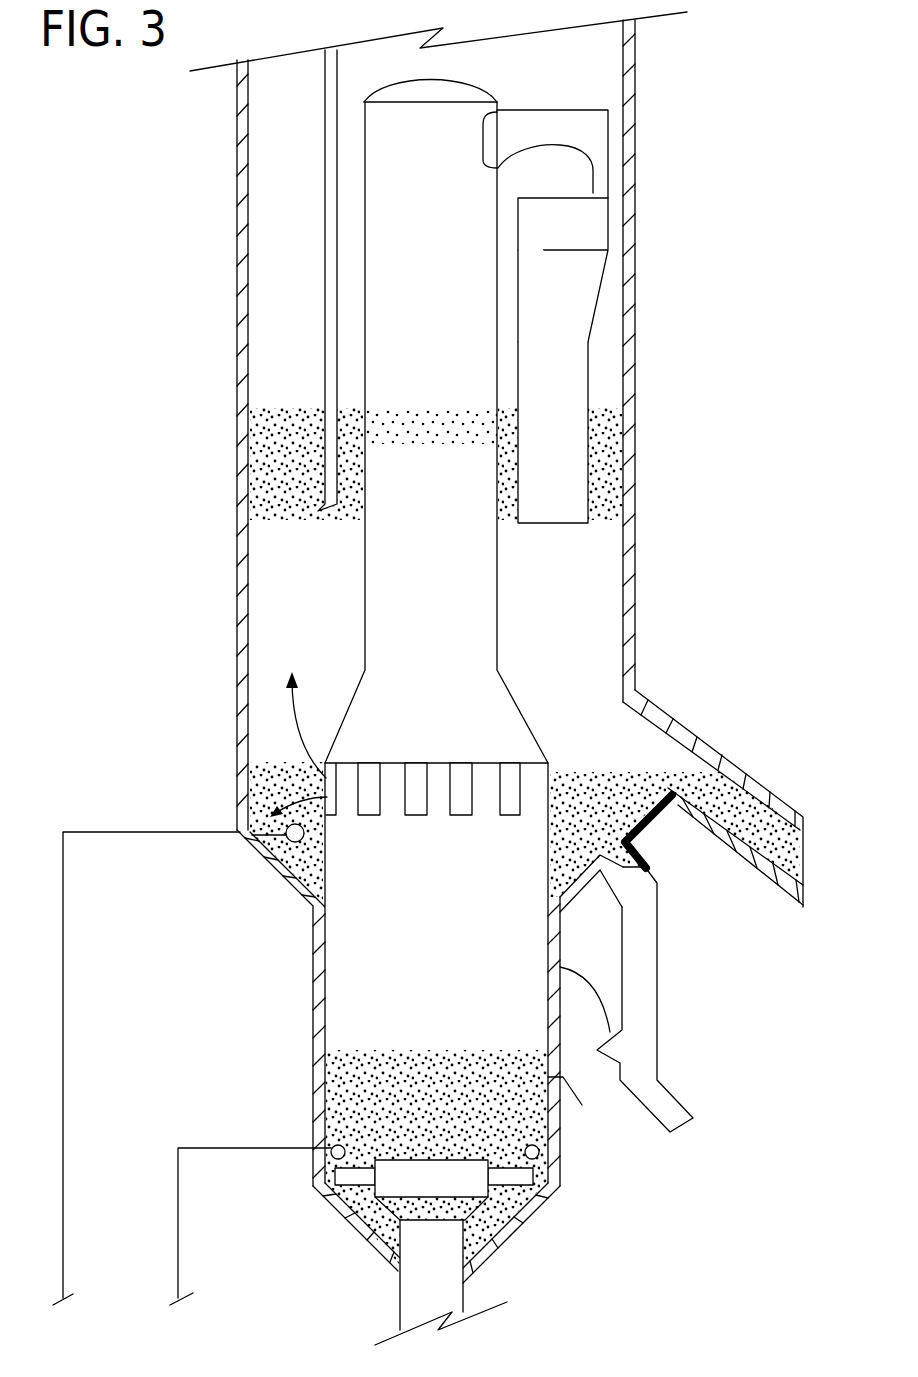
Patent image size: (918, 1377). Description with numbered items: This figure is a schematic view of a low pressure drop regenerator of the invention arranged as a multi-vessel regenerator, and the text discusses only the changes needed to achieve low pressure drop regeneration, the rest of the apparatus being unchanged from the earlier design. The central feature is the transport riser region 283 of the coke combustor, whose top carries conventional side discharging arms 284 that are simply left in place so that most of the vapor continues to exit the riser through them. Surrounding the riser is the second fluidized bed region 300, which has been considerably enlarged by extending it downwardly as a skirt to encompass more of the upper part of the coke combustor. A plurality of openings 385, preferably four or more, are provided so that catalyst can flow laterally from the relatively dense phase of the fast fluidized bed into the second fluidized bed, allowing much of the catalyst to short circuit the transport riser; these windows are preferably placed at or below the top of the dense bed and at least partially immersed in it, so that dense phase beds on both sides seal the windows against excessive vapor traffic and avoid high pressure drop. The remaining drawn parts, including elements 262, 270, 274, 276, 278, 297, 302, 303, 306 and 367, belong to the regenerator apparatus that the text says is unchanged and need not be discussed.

The reactor vessel 262 is at (310, 917).
The fluidizing gas supply line 270 is at (127, 830).
The gas distributor 274 is at (350, 1217).
The fluidized bed 276 is at (360, 1003).
The injection port 278 is at (250, 843).
The transport riser region 283 is at (460, 372).
The side discharging arms 284 is at (583, 433).
The thermocouple 297 is at (320, 507).
The second fluidized bed region 300 is at (235, 662).
The outlet pipe 302 is at (650, 1100).
The inlet nozzle 303 is at (583, 1083).
The outlet duct 306 is at (697, 742).
The gas supply line 367 is at (310, 1187).
The openings 385 is at (548, 812).